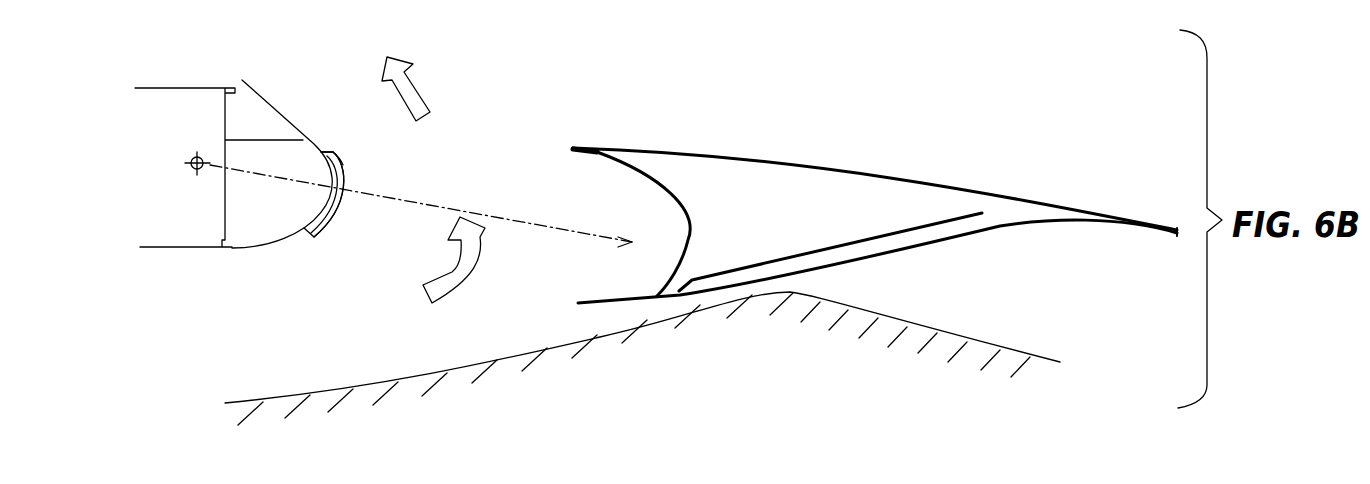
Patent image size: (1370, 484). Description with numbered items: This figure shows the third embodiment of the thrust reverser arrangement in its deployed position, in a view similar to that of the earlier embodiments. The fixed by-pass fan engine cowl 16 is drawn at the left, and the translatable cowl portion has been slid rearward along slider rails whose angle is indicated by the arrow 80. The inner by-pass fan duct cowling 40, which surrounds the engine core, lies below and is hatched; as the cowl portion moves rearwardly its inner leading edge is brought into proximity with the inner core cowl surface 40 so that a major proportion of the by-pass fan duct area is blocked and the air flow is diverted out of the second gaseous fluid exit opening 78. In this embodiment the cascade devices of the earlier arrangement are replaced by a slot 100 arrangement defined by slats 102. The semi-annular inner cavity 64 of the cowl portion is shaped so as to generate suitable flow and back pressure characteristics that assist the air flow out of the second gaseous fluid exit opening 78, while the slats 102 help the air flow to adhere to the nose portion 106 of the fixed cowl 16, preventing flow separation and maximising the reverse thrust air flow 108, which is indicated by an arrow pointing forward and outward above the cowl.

The by-pass fan engine cowl 16 is at (190, 88).
The inner by-pass fan duct cowling 40 is at (955, 332).
The semi-annular inner cavity 64 is at (640, 223).
The second gaseous fluid exit opening 78 is at (502, 172).
The arrow indicating slider rail angle 80 is at (541, 228).
The slot 100 is at (323, 217).
The slats 102 is at (345, 175).
The nose portion 106 is at (340, 163).
The reverse thrust air flow 108 is at (408, 92).